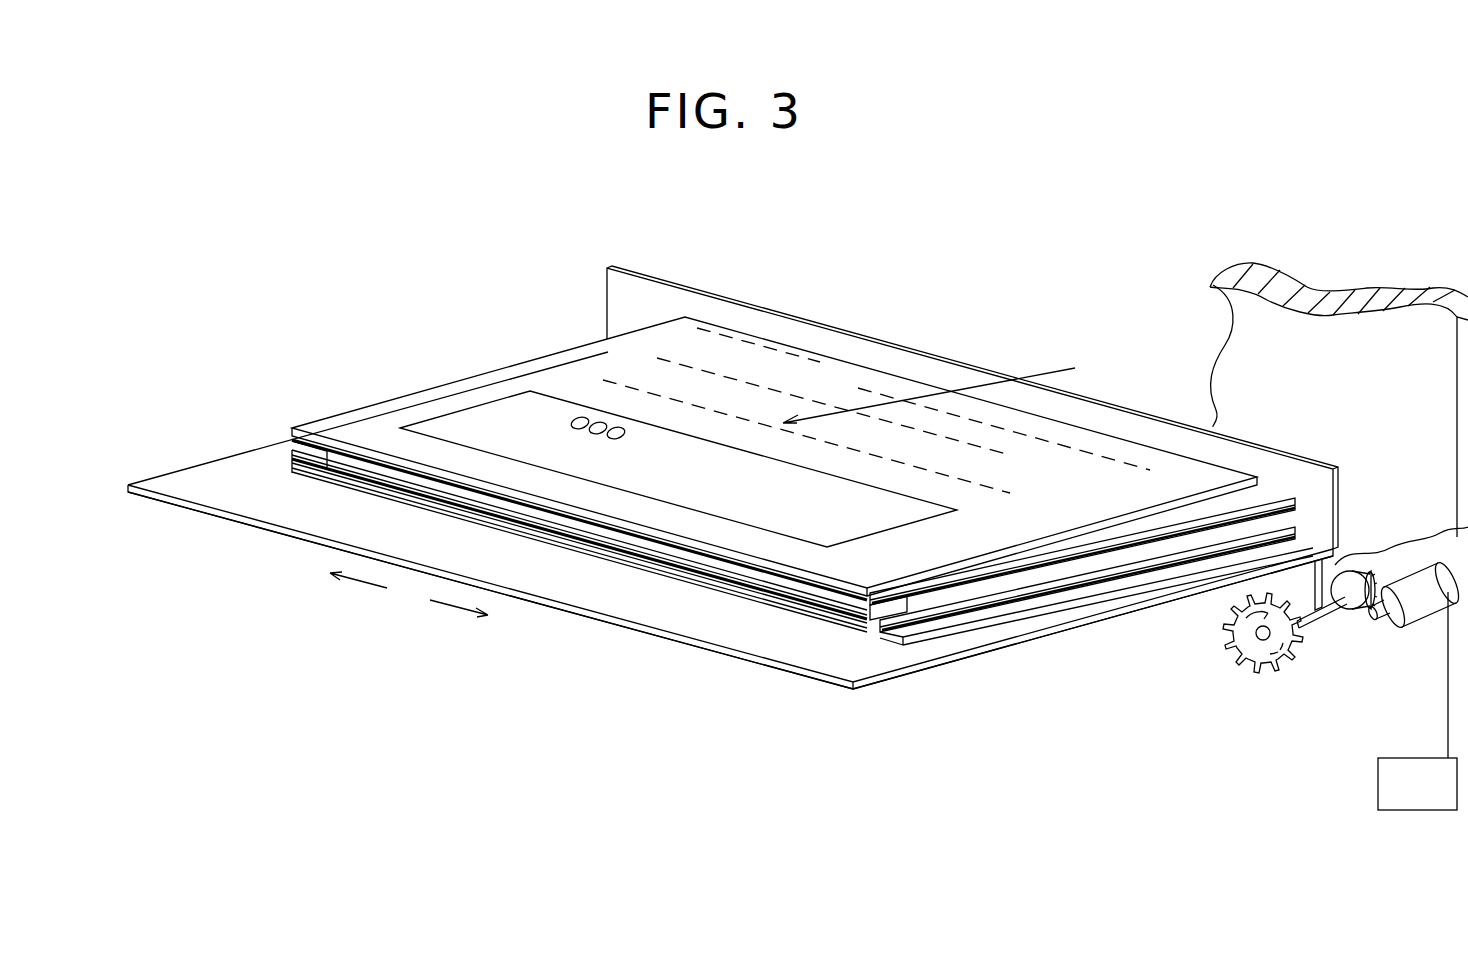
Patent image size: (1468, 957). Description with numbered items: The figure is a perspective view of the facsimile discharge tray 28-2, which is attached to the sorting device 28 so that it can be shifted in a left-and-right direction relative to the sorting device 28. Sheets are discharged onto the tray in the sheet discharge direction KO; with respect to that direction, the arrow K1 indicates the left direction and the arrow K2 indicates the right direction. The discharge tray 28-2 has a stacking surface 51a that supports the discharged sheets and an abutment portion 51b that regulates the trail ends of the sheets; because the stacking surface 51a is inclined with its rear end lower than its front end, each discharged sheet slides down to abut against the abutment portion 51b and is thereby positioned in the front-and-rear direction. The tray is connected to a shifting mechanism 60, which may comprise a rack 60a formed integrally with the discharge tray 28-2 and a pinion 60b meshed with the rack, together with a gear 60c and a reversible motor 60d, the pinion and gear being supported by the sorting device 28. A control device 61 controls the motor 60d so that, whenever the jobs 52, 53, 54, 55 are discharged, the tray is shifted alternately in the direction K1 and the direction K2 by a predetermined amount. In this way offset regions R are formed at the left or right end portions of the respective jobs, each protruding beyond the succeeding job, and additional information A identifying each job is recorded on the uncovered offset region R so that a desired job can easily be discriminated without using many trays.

The sorting device 28 is at (1303, 305).
The discharge tray 28-2 is at (828, 683).
The stacking surface 51a is at (605, 590).
The abutment portion 51b is at (1320, 500).
The job 52 is at (930, 637).
The job 53 is at (292, 462).
The job 54 is at (887, 614).
The job 55 is at (290, 428).
The shifting mechanism 60 is at (1310, 659).
The rack 60a is at (1323, 612).
The pinion 60b is at (1260, 650).
The gear 60c is at (1353, 610).
The reversible motor 60d is at (1427, 607).
The control device 61 is at (1377, 787).
The additional information A is at (487, 372).
The offset region R is at (290, 480).
The sheet discharge direction KO is at (929, 383).
The left direction K1 is at (459, 621).
The right direction K2 is at (358, 595).